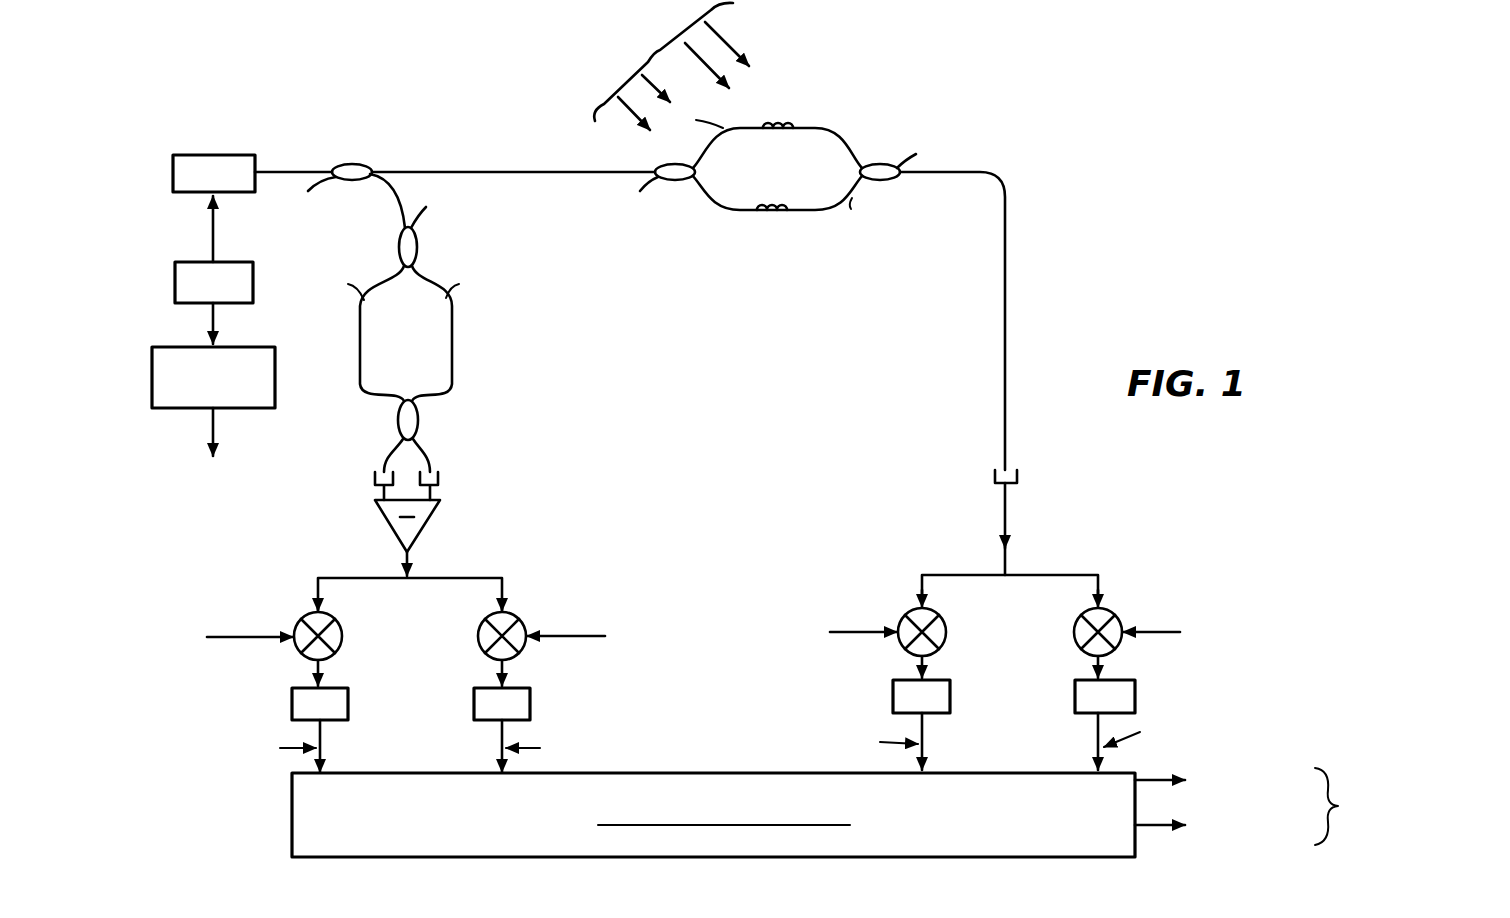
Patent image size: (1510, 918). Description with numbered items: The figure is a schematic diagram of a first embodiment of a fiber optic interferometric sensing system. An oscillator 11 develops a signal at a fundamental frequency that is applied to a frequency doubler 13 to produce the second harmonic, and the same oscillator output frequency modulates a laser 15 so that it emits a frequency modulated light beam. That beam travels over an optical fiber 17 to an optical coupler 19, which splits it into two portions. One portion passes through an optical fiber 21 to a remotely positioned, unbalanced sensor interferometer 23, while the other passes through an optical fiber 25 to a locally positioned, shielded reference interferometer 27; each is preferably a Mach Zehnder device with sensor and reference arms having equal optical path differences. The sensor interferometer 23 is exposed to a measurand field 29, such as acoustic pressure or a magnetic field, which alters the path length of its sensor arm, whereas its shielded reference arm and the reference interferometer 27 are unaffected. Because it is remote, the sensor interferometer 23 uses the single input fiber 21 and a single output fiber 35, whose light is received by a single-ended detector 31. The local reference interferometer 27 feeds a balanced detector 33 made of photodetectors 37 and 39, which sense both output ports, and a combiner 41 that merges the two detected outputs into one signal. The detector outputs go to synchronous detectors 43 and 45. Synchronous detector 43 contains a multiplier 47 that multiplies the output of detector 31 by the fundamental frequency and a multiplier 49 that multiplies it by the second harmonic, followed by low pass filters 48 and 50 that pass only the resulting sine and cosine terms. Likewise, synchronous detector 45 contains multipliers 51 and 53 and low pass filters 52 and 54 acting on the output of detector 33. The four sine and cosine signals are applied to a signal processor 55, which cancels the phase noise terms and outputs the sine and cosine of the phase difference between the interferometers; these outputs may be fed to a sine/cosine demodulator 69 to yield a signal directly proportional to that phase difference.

The oscillator 11 is at (253, 289).
The frequency doubler 13 is at (275, 375).
The laser 15 is at (230, 155).
The optical fiber 17 is at (294, 172).
The optical coupler 19 is at (356, 165).
The optical fiber 21 is at (476, 172).
The sensor interferometer 23 is at (806, 110).
The optical fiber 25 is at (388, 206).
The reference interferometer 27 is at (465, 336).
The measurand field 29 is at (671, 66).
The detector 31 is at (1030, 472).
The detector 33 is at (430, 506).
The output fiber 35 is at (1005, 330).
The photodetector 37 is at (376, 481).
The photodetector 39 is at (437, 481).
The combiner 41 is at (394, 534).
The synchronous detector 43 is at (953, 553).
The synchronous detector 45 is at (456, 568).
The multiplier 47 is at (947, 632).
The low pass filter 48 is at (893, 700).
The multiplier 49 is at (1073, 632).
The low pass filter 50 is at (1135, 700).
The multiplier 51 is at (343, 640).
The low pass filter 52 is at (292, 705).
The multiplier 53 is at (477, 640).
The low pass filter 54 is at (530, 702).
The signal processor 55 is at (800, 814).
The sine/cosine demodulator 69 is at (1395, 806).